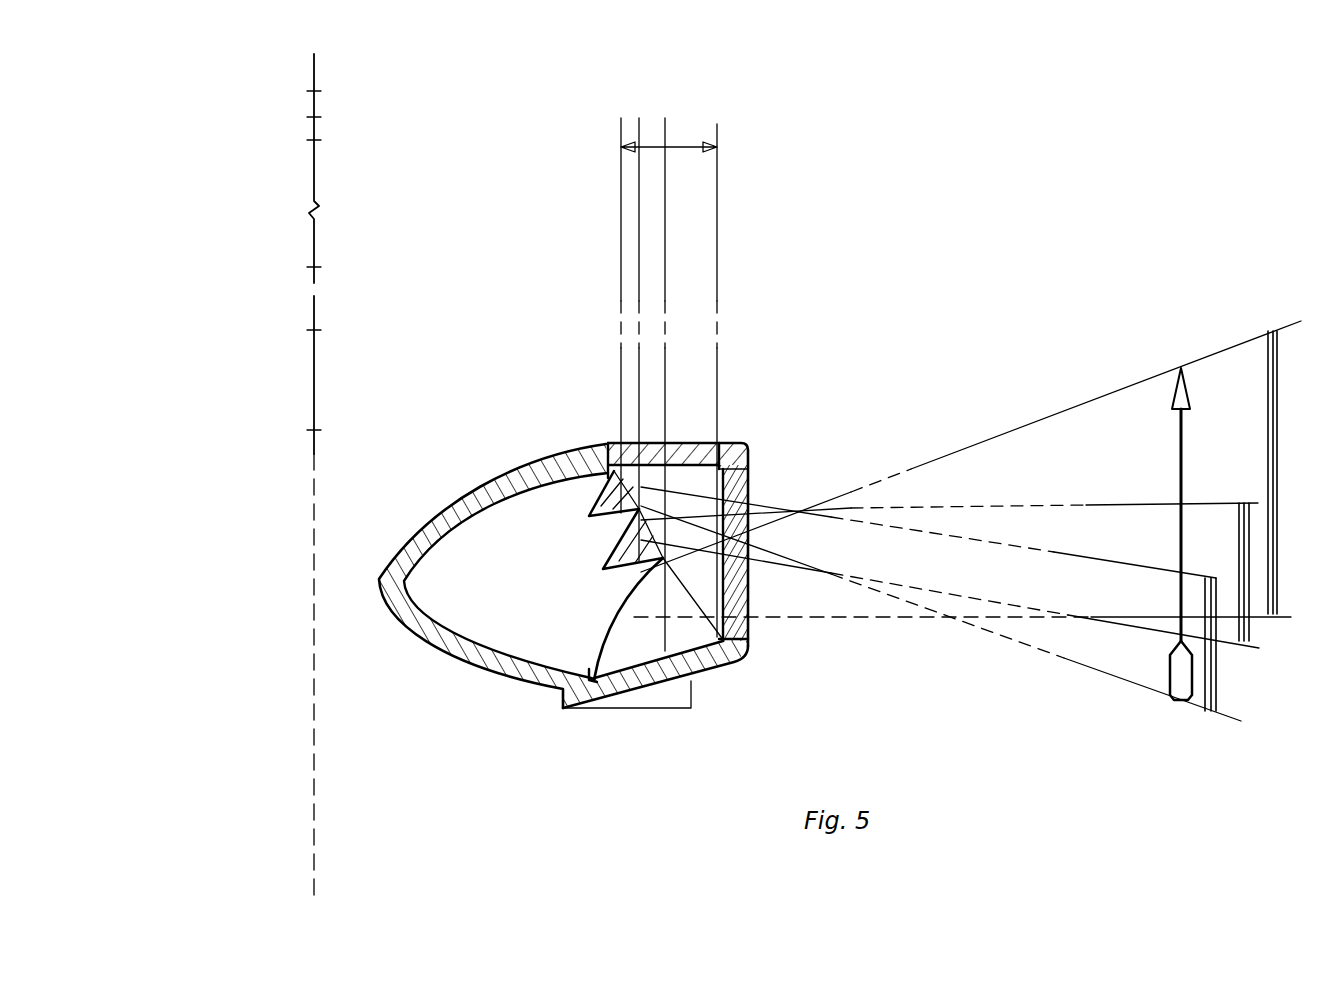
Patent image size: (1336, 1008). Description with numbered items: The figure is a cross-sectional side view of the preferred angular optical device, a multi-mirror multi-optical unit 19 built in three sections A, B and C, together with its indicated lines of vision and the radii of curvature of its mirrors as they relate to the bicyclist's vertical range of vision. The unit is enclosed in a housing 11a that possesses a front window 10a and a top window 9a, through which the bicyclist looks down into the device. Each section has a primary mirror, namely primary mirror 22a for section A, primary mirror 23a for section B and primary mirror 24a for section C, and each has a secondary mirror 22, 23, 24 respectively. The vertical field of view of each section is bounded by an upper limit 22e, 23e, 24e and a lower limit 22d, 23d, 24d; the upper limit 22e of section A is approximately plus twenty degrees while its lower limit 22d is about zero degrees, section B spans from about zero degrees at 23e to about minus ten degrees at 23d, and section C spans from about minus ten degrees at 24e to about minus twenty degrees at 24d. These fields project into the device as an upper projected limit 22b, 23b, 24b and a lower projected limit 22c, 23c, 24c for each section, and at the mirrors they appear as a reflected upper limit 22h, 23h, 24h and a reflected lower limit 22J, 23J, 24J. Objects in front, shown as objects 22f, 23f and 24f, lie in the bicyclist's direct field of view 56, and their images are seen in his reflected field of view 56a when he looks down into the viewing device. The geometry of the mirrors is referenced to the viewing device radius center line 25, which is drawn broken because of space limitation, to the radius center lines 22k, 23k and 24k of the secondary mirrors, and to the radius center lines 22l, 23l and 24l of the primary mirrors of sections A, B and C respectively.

The top window 9a is at (720, 443).
The front window 10a is at (823, 452).
The housing 11a is at (425, 525).
The multi-mirror multi-optical unit 19 is at (457, 476).
The secondary mirror 22 is at (700, 645).
The primary mirror 22a is at (608, 648).
The upper projected limit of the field of view 22b is at (718, 237).
The lower projected limit of the field of view 22c is at (665, 185).
The lower limit of vertical field of view 22d is at (1132, 614).
The upper limit of vertical field of view 22e is at (1102, 397).
The object in front 22f is at (1267, 381).
The reflected upper limit 22h is at (745, 582).
The reflected lower limit 22J is at (640, 629).
The radius center line 22k is at (313, 139).
The radius center line 22l is at (313, 429).
The secondary mirror 23 is at (607, 569).
The primary mirror 23a is at (602, 566).
The upper projected limit of the field of view 23b is at (667, 218).
The lower projected limit of the field of view 23c is at (637, 243).
The lower limit of vertical field of view 23d is at (1145, 628).
The upper limit of vertical field of view 23e is at (1133, 503).
The object in front 23f is at (1238, 532).
The reflected upper limit 23h is at (650, 565).
The reflected lower limit 23J is at (615, 565).
The radius center line 23k is at (313, 116).
The radius center line 23l is at (313, 329).
The secondary mirror 24 is at (590, 515).
The primary mirror 24a is at (592, 497).
The upper projected limit of the field of view 24b is at (638, 181).
The lower projected limit of the field of view 24c is at (620, 222).
The lower limit of vertical field of view 24d is at (1145, 687).
The upper limit of vertical field of view 24e is at (1143, 568).
The object in front 24f is at (1217, 678).
The reflected upper limit 24h is at (662, 440).
The reflected lower limit 24J is at (610, 494).
The radius center line 24k is at (313, 90).
The radius center line 24l is at (306, 266).
The viewing device radius center line 25 is at (313, 500).
The field of view 56 is at (1181, 428).
The reflected field of view 56a is at (683, 146).